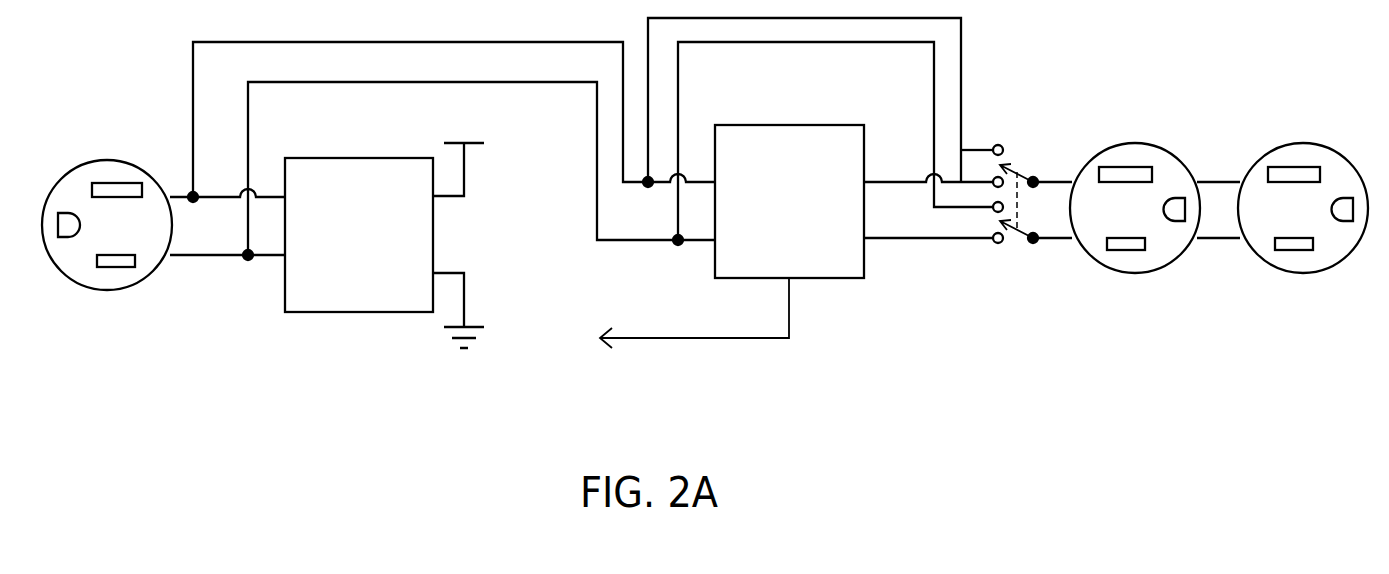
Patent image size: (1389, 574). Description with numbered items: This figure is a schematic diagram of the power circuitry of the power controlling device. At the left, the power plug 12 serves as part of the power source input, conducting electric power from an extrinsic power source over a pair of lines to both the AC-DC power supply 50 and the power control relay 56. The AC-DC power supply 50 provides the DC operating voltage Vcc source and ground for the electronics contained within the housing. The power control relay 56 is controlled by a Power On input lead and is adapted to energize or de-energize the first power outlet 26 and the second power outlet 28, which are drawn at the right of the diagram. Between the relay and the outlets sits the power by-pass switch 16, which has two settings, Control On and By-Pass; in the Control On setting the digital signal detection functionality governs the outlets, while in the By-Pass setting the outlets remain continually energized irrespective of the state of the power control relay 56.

The power plug 12 is at (110, 291).
The AC-DC power supply 50 is at (285, 291).
The power control relay 56 is at (866, 130).
The power by-pass switch 16 is at (1012, 165).
The first power outlet 26 is at (1177, 262).
The second power outlet 28 is at (1303, 275).